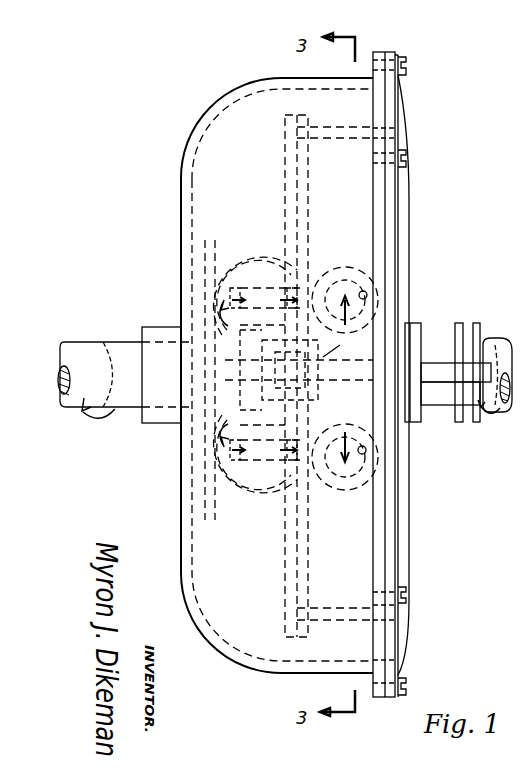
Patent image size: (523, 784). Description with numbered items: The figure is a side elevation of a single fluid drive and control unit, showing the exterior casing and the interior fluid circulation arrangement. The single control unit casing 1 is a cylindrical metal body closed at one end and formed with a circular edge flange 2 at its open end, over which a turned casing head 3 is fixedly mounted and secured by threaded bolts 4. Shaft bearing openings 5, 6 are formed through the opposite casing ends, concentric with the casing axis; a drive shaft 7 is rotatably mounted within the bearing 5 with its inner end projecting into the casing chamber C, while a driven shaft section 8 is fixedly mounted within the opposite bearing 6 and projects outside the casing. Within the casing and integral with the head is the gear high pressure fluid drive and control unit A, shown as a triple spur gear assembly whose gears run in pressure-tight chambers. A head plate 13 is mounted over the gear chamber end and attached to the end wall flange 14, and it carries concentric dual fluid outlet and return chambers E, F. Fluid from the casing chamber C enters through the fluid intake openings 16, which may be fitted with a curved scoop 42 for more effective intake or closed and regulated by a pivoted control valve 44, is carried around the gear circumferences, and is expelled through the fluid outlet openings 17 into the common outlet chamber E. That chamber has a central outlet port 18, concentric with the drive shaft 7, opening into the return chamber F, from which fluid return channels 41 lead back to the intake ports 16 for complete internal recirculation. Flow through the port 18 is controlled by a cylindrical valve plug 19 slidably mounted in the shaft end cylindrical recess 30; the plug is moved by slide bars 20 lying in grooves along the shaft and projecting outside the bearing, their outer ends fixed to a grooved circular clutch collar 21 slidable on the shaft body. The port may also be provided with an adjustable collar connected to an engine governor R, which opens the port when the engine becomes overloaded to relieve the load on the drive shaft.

The single control unit casing 1 is at (228, 663).
The circular edge flange 2 is at (383, 52).
The casing head 3 is at (399, 55).
The threaded bolts 4 is at (407, 68).
The shaft bearing opening 5 is at (411, 333).
The shaft bearing opening 6 is at (165, 344).
The drive shaft 7 is at (498, 340).
The driven shaft section 8 is at (86, 343).
The head plate 13 is at (285, 602).
The end wall flange 14 is at (447, 383).
The fluid intake openings 16 is at (366, 293).
The fluid outlet openings 17 is at (295, 285).
The central outlet port 18 is at (237, 352).
The cylindrical valve plug 19 is at (263, 357).
The slide bars 20 is at (425, 370).
The grooved circular clutch collar 21 is at (466, 325).
The shaft end cylindrical recess 30 is at (323, 357).
The fluid return channels 41 is at (250, 285).
The curved scoop 42 is at (372, 272).
The pivoted control valve 44 is at (368, 296).
The gear high pressure fluid drive and control unit A is at (408, 150).
The casing chamber C is at (230, 578).
The outlet chamber E is at (275, 268).
The fluid return chamber F is at (255, 356).
The engine governor R is at (308, 126).